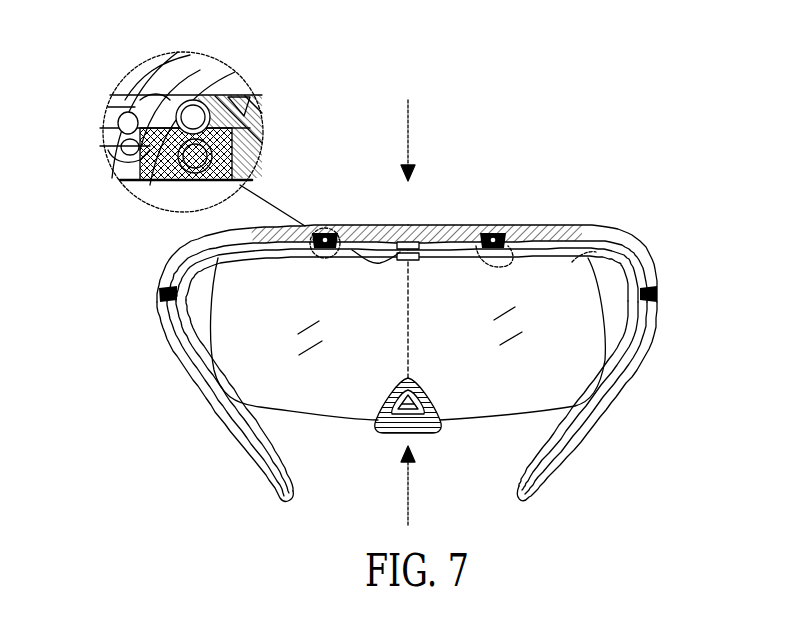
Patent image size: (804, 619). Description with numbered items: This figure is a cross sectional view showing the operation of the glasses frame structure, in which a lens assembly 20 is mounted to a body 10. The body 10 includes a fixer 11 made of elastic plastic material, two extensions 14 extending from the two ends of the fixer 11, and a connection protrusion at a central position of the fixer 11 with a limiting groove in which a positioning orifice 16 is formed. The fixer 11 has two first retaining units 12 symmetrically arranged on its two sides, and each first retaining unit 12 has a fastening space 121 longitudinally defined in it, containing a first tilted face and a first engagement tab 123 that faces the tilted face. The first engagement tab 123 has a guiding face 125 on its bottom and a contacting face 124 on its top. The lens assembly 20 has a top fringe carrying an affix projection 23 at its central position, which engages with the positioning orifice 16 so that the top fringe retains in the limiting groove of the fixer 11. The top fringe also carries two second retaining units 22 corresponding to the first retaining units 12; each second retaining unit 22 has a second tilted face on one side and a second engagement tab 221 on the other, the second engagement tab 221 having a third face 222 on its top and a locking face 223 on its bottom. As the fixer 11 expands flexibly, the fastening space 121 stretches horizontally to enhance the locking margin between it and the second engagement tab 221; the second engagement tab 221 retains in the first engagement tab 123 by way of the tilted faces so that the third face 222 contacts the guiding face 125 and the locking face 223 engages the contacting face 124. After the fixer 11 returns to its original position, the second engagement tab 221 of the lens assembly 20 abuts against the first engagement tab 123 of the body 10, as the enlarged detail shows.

The body 10 is at (626, 172).
The fixer 11 is at (540, 232).
The first retaining unit 12 is at (495, 230).
The extension 14 is at (215, 408).
The positioning orifice 16 is at (413, 240).
The lens assembly 20 is at (612, 243).
The second retaining unit 22 is at (323, 232).
The affix projection 23 is at (380, 232).
The fastening space 121 is at (246, 104).
The first engagement tab 123 is at (305, 228).
The contacting face 124 is at (150, 92).
The guiding face 125 is at (114, 157).
The second engagement tab 221 is at (565, 295).
The third face 222 is at (188, 84).
The locking face 223 is at (128, 182).